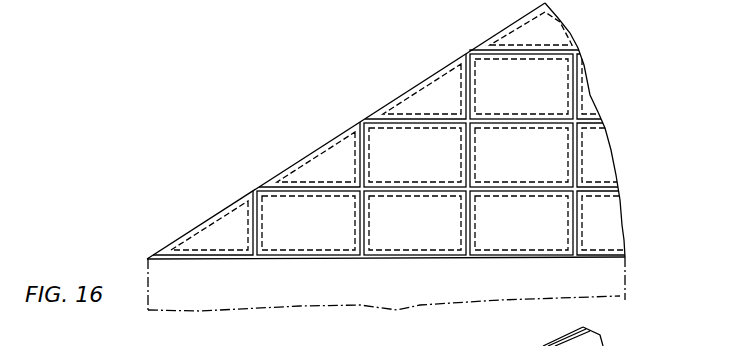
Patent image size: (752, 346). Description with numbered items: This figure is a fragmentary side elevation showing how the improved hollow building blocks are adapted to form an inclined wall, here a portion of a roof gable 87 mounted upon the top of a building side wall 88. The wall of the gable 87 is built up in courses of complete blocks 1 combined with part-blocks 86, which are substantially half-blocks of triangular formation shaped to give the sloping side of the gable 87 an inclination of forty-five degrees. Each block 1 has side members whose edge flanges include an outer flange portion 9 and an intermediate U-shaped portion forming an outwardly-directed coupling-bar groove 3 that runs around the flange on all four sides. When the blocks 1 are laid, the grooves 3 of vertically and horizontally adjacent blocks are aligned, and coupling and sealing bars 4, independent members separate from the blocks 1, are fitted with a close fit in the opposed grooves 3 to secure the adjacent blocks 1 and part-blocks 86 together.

The hollow building block 1 is at (570, 92).
The coupling-bar groove 3 is at (397, 192).
The coupling and sealing bar 4 is at (470, 91).
The outer flange portion 9 is at (456, 192).
The part-block 86 is at (512, 33).
The roof gable 87 is at (363, 108).
The building side wall 88 is at (147, 302).